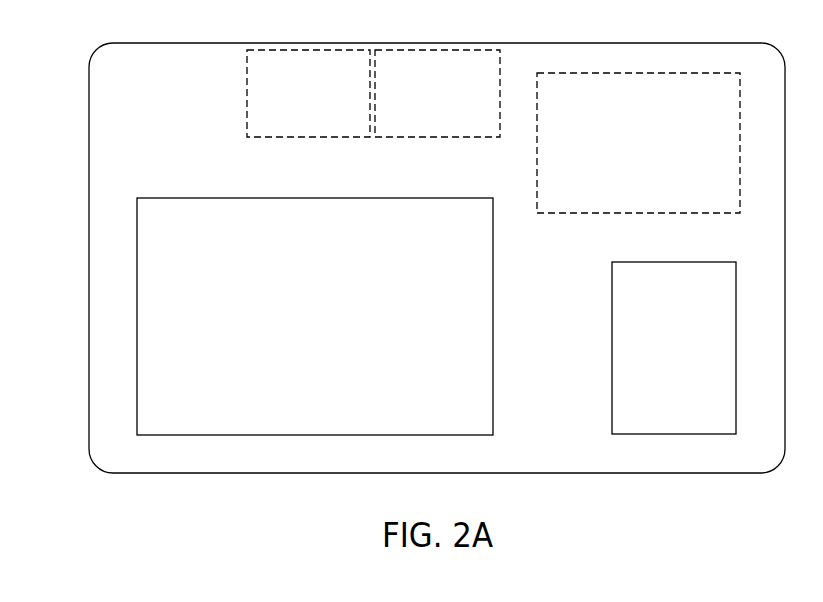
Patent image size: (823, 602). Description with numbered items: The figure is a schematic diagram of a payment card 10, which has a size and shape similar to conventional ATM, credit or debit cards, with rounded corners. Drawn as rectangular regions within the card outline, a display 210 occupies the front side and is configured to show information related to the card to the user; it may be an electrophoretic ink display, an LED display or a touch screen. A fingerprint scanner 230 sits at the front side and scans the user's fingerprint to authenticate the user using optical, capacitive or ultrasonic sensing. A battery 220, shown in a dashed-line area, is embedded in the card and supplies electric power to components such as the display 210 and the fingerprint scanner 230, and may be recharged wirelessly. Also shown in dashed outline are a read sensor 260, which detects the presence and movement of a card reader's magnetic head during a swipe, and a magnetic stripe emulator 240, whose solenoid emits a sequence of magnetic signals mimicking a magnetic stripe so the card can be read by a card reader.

The payment card 10 is at (89, 72).
The display 210 is at (315, 316).
The battery 220 is at (638, 143).
The fingerprint scanner 230 is at (674, 348).
The magnetic stripe emulator 240 is at (437, 93).
The read sensor 260 is at (308, 93).